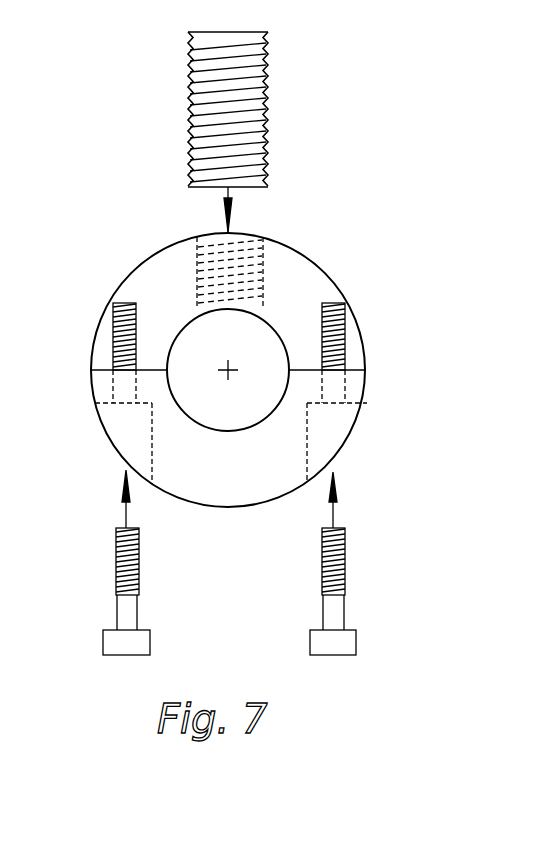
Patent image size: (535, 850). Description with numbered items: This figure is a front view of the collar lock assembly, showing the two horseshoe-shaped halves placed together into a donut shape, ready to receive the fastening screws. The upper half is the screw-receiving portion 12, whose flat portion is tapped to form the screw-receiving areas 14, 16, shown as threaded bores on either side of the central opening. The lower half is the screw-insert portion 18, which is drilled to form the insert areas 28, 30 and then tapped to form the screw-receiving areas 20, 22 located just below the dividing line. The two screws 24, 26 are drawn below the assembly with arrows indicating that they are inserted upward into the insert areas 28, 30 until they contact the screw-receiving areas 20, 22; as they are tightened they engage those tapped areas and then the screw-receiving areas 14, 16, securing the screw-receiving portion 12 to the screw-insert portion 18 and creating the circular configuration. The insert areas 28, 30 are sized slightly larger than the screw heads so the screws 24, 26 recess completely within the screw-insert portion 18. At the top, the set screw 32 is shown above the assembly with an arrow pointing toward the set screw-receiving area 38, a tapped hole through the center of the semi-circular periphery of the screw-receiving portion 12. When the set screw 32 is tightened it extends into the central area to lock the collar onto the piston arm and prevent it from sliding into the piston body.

The screw-receiving portion 12 is at (291, 265).
The screw-receiving area 14 is at (325, 300).
The screw-receiving area 16 is at (130, 300).
The screw-insert portion 18 is at (198, 480).
The screw-receiving area 20 is at (337, 385).
The screw-receiving area 22 is at (122, 385).
The screw 24 is at (117, 553).
The screw 26 is at (345, 578).
The insert area 28 is at (338, 437).
The insert area 30 is at (118, 430).
The set screw 32 is at (215, 70).
The set screw-receiving area 38 is at (215, 238).